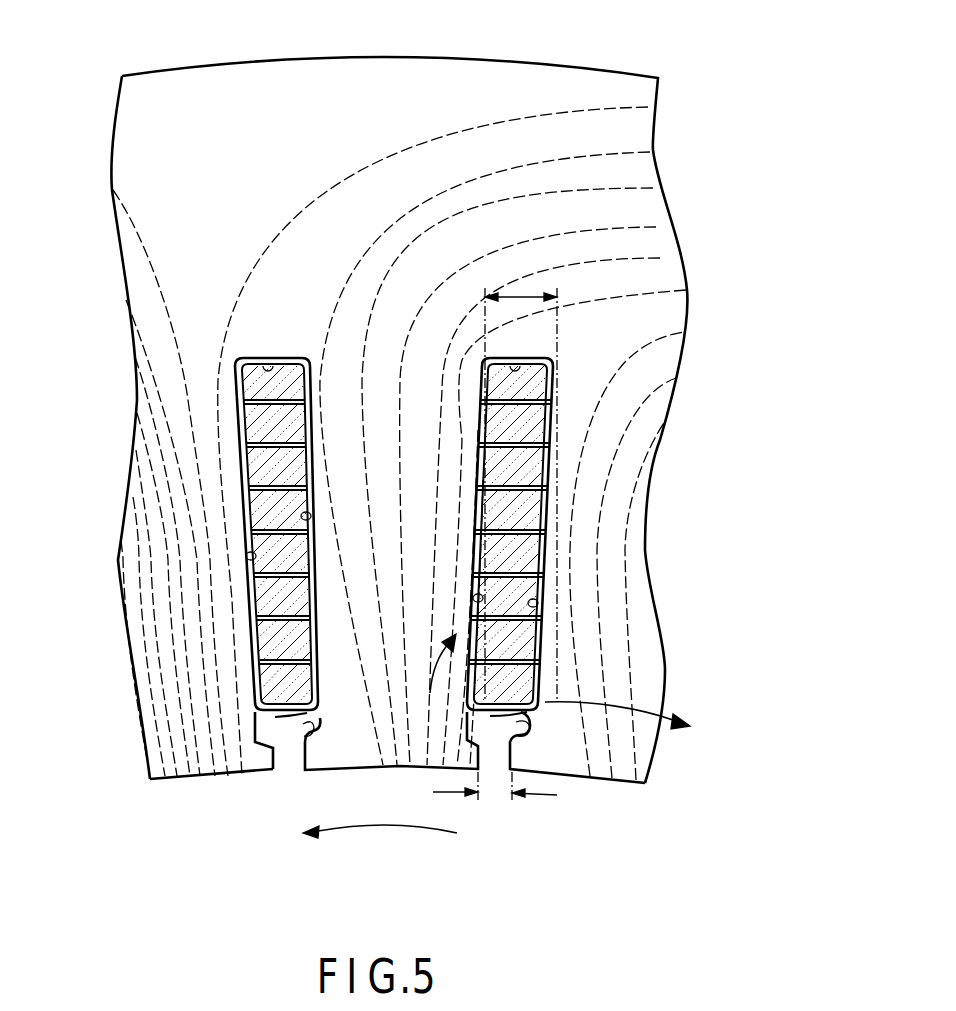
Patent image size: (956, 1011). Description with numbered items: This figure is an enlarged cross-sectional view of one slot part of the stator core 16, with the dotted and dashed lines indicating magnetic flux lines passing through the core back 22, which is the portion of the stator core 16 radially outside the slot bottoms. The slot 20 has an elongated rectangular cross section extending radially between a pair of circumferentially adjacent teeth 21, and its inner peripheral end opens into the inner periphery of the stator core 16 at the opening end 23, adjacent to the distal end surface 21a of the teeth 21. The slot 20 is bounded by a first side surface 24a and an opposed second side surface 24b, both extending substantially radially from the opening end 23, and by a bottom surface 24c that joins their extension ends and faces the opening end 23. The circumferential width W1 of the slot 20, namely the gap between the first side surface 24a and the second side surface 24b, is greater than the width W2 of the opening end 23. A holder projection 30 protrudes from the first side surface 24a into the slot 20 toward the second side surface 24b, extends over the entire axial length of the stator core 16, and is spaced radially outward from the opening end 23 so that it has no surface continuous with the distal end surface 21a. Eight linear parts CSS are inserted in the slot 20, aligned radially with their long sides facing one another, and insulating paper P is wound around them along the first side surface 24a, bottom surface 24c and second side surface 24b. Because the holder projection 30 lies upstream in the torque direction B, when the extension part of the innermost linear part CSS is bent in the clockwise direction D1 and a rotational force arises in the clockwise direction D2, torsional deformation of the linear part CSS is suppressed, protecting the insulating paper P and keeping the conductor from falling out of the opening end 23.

The stator core 16 is at (220, 76).
The core back (yoke) 22 is at (345, 112).
The slot 20 is at (230, 446).
The teeth 21 is at (202, 780).
The distal end surface of the teeth 21a is at (345, 771).
The opening end 23 is at (288, 762).
The first side surface 24a is at (312, 517).
The second side surface 24b is at (252, 556).
The bottom surface 24c is at (268, 366).
The holder projection 30 is at (320, 732).
The linear parts CSS is at (293, 428).
The insulating paper P is at (306, 490).
The width of the slot W1 is at (522, 290).
The width of the opening end W2 is at (492, 797).
The clockwise direction D1 is at (648, 712).
The clockwise direction of rotational force D2 is at (430, 666).
The torque direction B is at (388, 838).